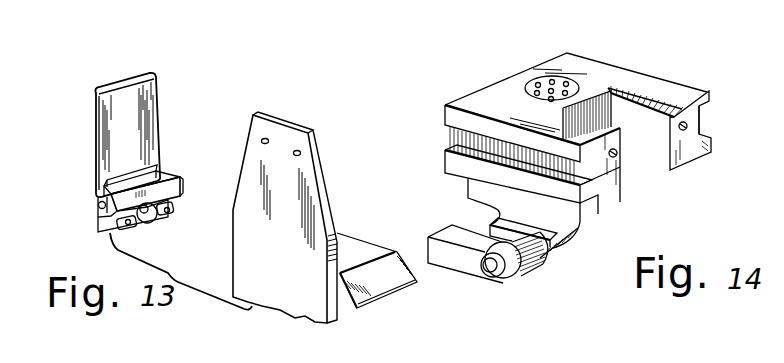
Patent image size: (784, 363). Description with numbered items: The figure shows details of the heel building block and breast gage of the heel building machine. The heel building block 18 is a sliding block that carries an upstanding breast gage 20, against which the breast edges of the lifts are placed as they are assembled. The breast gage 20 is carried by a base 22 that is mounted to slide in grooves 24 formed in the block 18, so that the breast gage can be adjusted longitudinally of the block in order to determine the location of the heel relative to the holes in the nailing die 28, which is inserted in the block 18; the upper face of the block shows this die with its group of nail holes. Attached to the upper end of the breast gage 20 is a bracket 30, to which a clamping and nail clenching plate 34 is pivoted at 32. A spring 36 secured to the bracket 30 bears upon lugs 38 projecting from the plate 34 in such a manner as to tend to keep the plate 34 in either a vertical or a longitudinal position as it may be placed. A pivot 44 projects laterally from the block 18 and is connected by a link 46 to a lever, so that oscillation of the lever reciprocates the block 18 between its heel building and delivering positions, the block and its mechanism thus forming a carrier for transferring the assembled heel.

In FIG. 14, the heel building block 18 is at (612, 68).
In FIG. 13, the breast gage 20 is at (285, 217).
In FIG. 13, the base 22 is at (355, 238).
In FIG. 14, the grooves 24 is at (667, 118).
In FIG. 14, the nailing die 28 is at (536, 82).
In FIG. 13, the bracket 30 is at (157, 218).
In FIG. 13, the pivot 32 is at (98, 207).
In FIG. 13, the clamping and nail clenching plate 34 is at (127, 135).
In FIG. 13, the spring 36 is at (183, 186).
In FIG. 13, the lugs 38 is at (100, 195).
In FIG. 14, the pivot 44 is at (492, 277).
In FIG. 14, the link 46 is at (455, 264).